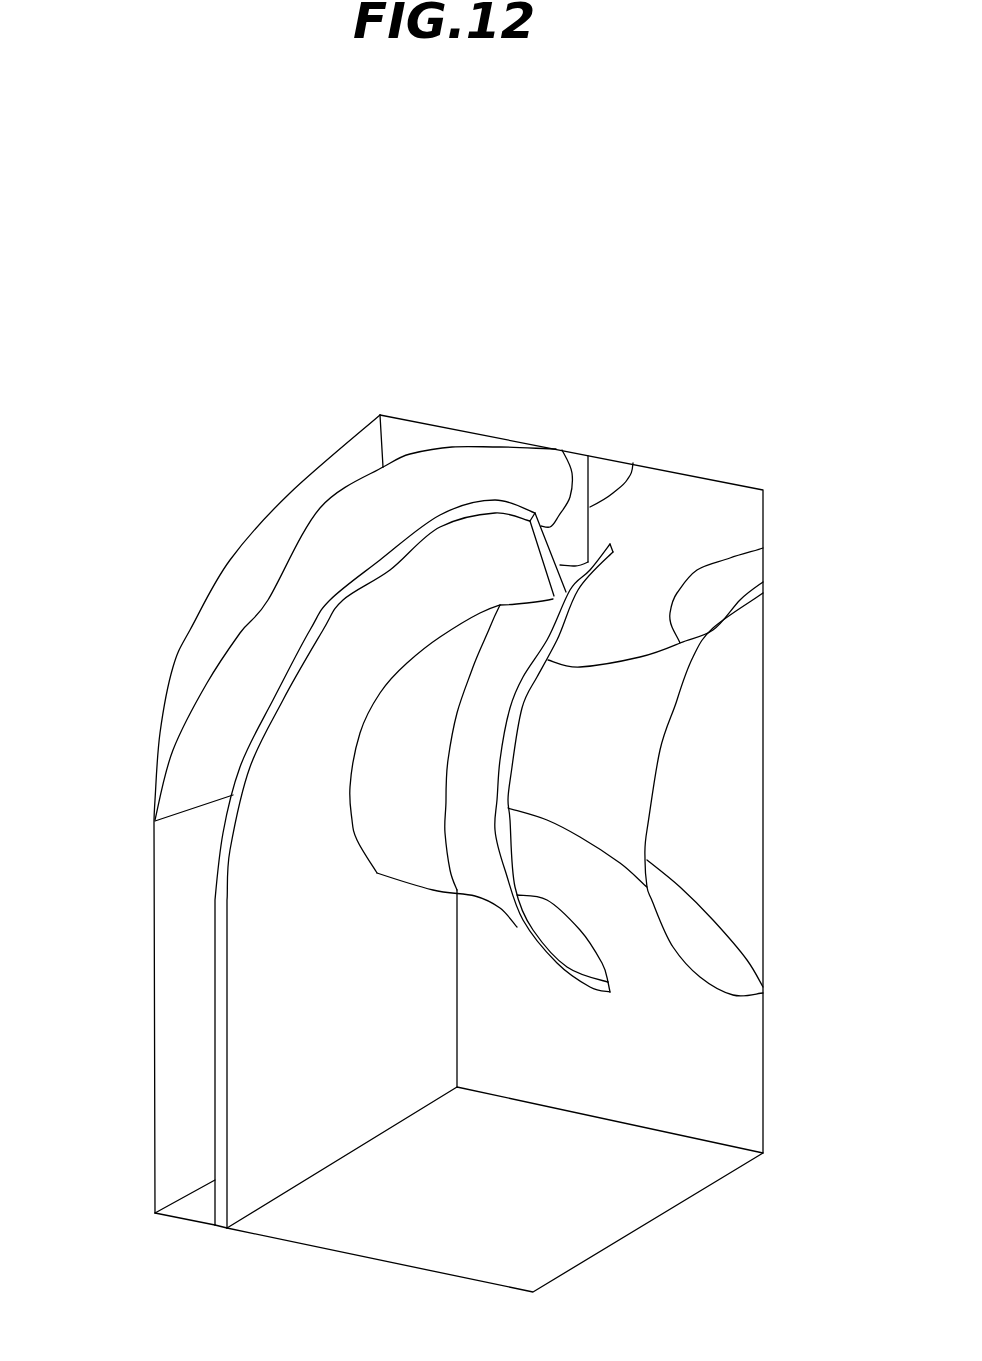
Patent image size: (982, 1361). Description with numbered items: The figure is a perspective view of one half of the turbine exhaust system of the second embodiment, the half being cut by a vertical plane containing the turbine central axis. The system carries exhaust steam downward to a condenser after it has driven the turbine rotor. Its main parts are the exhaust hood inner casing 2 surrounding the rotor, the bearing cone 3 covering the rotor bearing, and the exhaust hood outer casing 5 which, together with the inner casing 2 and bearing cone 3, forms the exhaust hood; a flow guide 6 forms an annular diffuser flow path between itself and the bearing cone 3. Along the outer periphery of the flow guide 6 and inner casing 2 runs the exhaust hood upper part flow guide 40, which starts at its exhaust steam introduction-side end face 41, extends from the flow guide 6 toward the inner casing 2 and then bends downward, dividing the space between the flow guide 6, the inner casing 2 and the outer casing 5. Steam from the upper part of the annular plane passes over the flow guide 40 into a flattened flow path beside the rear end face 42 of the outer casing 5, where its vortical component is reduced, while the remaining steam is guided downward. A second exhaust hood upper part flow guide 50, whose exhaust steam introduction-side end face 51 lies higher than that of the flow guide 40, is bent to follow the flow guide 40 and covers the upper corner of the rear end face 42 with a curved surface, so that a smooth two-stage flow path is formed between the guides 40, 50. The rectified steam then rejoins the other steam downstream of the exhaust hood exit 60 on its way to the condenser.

The exhaust hood inner casing 2 is at (419, 683).
The bearing cone 3 is at (763, 548).
The exhaust hood outer casing 5 is at (357, 420).
The flow guide 6 is at (570, 983).
The exhaust hood upper part flow guide 40 is at (210, 943).
The exhaust steam introduction-side end face 41 is at (560, 448).
The rear end face 42 is at (213, 625).
The second exhaust hood upper part flow guide 50 is at (452, 442).
The exhaust steam introduction-side end face 51 is at (633, 463).
The exhaust hood exit 60 is at (452, 1210).